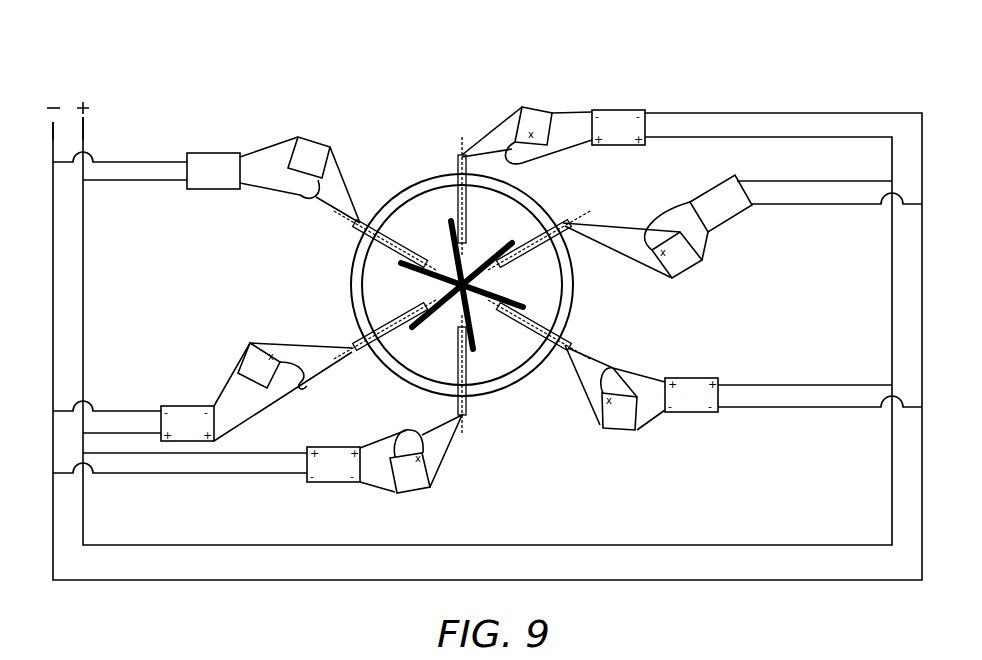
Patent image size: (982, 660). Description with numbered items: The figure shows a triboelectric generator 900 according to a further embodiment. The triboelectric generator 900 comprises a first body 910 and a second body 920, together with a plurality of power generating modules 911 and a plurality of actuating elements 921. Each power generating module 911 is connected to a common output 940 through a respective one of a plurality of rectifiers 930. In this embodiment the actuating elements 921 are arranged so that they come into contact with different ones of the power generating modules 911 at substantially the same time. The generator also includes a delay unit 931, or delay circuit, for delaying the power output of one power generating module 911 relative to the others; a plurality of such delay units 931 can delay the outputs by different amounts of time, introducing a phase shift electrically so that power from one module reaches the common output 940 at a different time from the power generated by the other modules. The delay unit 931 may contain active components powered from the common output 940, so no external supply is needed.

The triboelectric generator 900 is at (807, 85).
The first body 910 is at (590, 320).
The power generating module 911 is at (530, 380).
The second body 920 is at (458, 286).
The actuating element 921 is at (449, 237).
The rectifier 930 is at (302, 135).
The delay unit 931 is at (208, 153).
The common output 940 is at (83, 145).